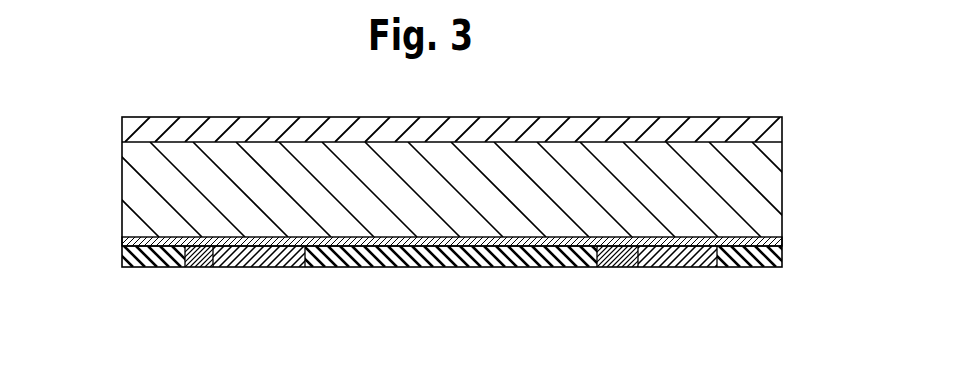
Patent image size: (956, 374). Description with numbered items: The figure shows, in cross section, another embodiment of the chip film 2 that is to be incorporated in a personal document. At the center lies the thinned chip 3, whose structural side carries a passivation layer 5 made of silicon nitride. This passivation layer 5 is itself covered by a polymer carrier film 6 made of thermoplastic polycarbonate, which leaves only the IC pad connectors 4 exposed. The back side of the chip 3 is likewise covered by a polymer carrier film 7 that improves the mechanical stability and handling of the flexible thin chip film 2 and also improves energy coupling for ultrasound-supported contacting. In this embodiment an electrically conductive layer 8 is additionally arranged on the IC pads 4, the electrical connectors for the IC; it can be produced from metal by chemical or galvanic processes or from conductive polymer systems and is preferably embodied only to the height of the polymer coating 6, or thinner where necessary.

The chip film 2 is at (669, 103).
The thinned chip 3 is at (764, 176).
The IC pad connectors 4 is at (212, 267).
The passivation layer 5 is at (782, 237).
The polymer carrier film 6 is at (783, 259).
The back side polymer carrier film 7 is at (782, 120).
The electrically conductive layer 8 is at (268, 267).